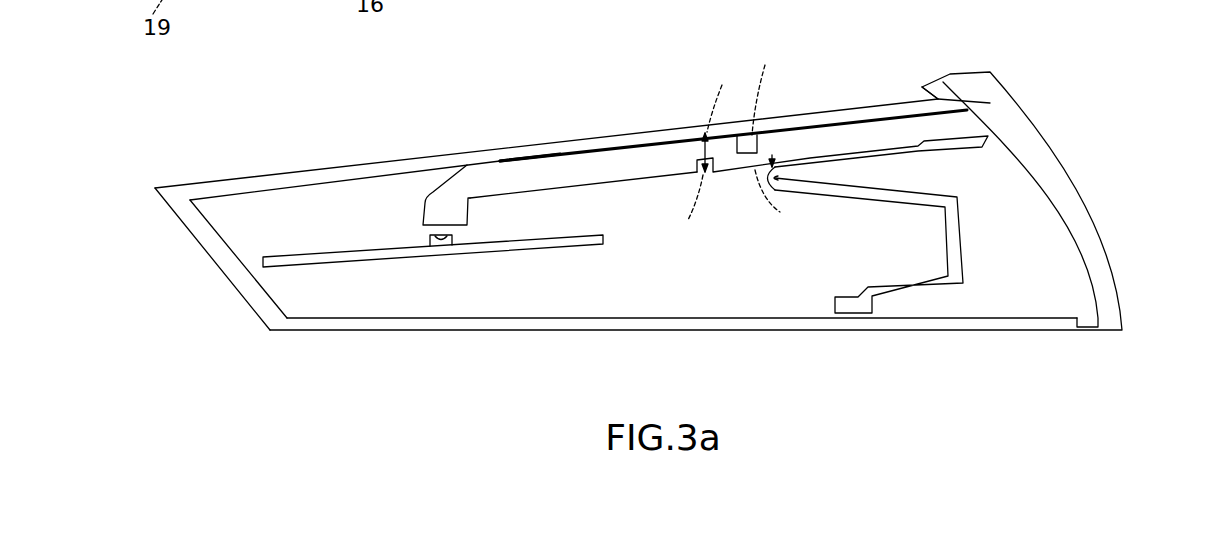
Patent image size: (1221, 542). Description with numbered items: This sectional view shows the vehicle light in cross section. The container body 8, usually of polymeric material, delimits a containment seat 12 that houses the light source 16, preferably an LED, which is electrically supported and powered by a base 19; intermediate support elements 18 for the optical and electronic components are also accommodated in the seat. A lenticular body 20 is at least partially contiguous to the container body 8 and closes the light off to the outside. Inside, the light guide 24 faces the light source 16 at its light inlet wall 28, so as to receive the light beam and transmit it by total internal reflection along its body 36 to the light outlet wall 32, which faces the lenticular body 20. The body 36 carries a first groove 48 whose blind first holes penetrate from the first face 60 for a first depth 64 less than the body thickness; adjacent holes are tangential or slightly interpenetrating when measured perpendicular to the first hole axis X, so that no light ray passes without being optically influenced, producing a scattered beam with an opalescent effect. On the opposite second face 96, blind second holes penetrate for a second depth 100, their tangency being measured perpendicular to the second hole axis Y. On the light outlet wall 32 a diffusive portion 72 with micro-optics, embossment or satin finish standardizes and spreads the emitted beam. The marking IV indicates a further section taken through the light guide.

The container body 8 is at (212, 255).
The containment seat 12 is at (557, 283).
The light source 16 is at (440, 247).
The intermediate support elements 18 is at (965, 285).
The bases 19 is at (322, 268).
The lenticular body 20 is at (1062, 155).
The light guide 24 is at (575, 170).
The body 36 is at (733, 135).
The light inlet wall 28 is at (440, 223).
The light outlet wall 32 is at (1000, 118).
The first groove 48 is at (745, 158).
The first face 60 is at (508, 203).
The first depth 64 is at (672, 183).
The diffusive portion 72 is at (1045, 195).
The second face 96 is at (500, 160).
The second depth 100 is at (772, 155).
The section indication IV is at (684, 284).
The first hole axis X is at (702, 152).
The second hole axis Y is at (772, 137).